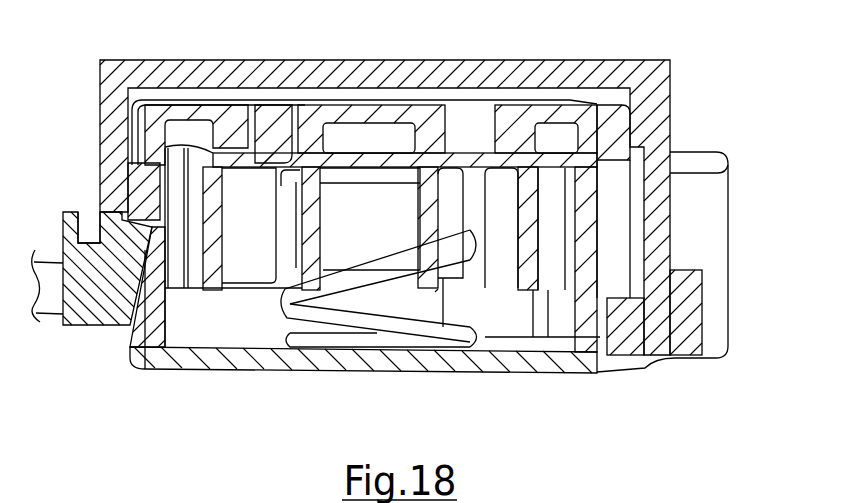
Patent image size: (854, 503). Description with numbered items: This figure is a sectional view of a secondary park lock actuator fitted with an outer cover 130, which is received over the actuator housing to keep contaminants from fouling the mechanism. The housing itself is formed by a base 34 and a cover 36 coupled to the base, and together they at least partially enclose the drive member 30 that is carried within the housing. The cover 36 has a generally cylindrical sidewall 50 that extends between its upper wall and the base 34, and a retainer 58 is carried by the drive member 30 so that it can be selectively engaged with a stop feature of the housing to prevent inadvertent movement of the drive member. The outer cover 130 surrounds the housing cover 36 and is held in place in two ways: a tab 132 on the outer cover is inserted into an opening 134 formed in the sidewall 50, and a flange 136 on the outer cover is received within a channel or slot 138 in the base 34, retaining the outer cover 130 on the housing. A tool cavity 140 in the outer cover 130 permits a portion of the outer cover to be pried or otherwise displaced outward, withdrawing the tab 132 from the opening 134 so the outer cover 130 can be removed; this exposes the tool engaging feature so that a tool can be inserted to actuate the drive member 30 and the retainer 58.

The outer cover 130 is at (679, 49).
The cover 36 is at (568, 108).
The retainer 58 is at (273, 122).
The sidewall 50 is at (608, 142).
The drive member 30 is at (548, 234).
The slot 138 is at (664, 332).
The flange 136 is at (687, 347).
The base 34 is at (522, 360).
The opening 134 is at (158, 248).
The tab 132 is at (97, 312).
The tool cavity 140 is at (80, 233).